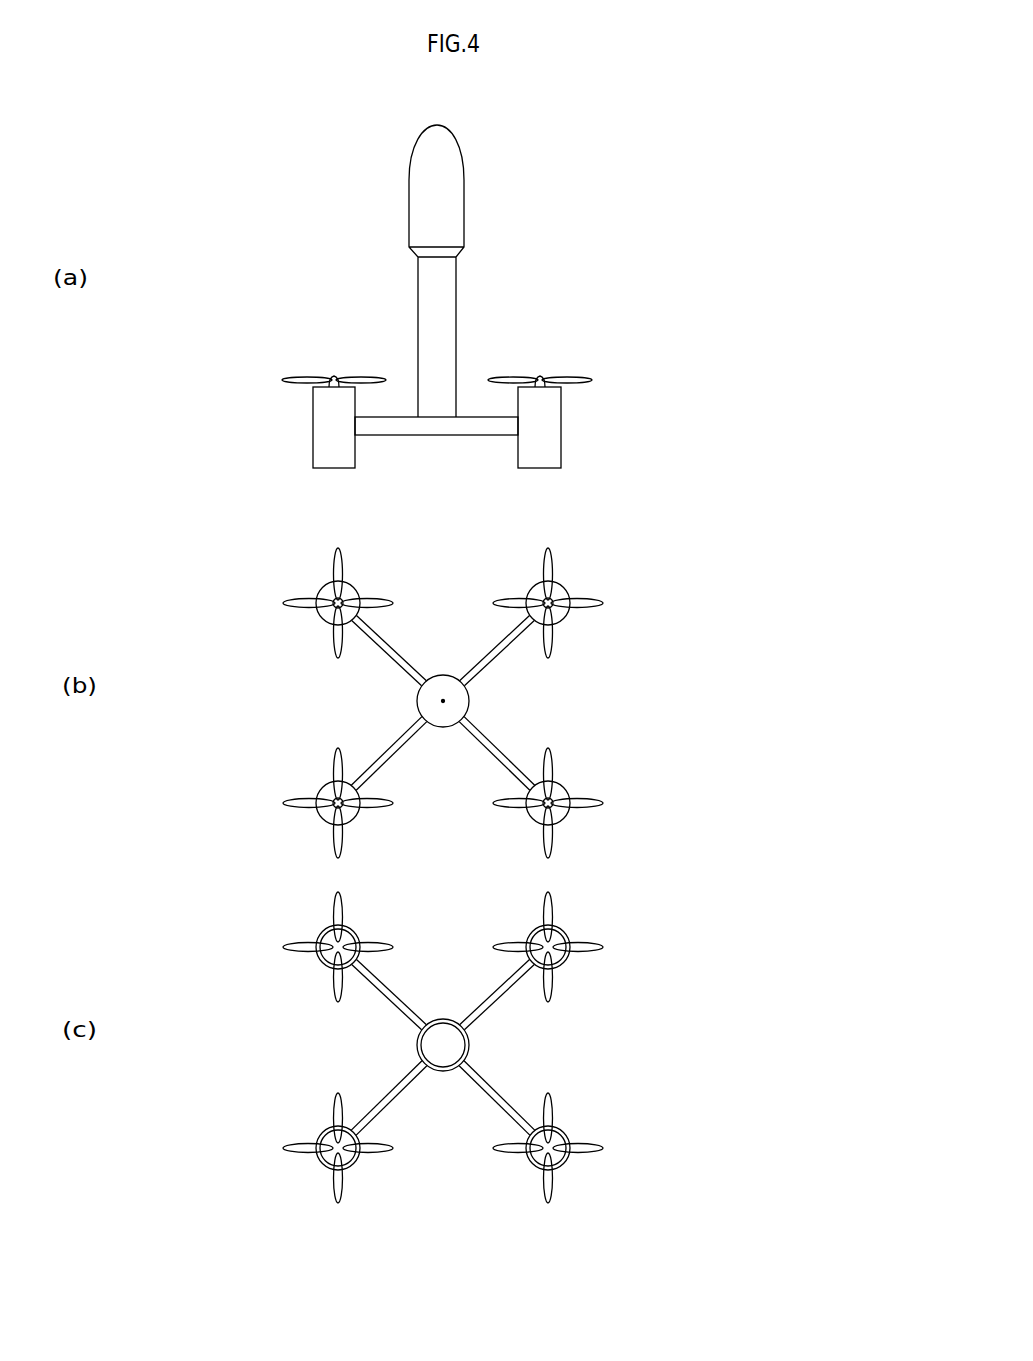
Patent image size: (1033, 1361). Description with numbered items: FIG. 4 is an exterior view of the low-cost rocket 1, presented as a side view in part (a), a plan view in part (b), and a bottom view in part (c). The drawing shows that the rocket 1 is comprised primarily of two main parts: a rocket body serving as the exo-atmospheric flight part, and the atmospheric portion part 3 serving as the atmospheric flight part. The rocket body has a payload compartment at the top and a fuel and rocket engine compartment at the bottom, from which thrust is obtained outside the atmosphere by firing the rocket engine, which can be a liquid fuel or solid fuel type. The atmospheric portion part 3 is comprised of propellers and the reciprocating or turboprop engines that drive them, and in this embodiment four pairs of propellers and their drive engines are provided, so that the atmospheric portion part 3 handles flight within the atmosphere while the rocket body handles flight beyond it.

The rocket 1 is at (469, 304).
The atmospheric portion part 3 is at (469, 416).